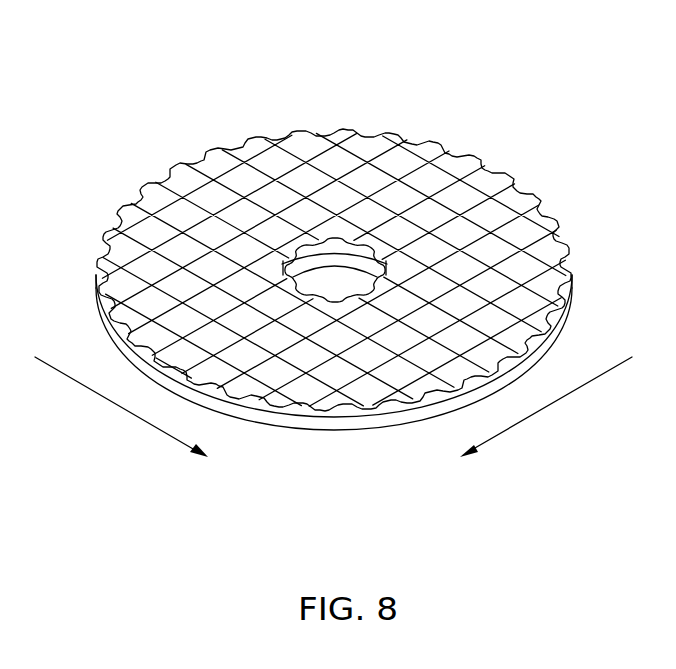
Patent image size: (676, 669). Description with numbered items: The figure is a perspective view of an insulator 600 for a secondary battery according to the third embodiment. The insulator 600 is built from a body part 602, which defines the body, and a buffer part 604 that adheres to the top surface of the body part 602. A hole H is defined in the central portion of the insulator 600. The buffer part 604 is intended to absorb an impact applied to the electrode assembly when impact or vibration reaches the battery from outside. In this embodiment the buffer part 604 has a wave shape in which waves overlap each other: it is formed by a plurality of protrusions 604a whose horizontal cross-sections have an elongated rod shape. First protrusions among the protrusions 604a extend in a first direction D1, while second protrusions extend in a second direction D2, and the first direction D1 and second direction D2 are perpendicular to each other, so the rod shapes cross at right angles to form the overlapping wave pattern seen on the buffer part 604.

The insulator 600 is at (411, 73).
The body part 602 is at (327, 428).
The buffer part 604 is at (490, 172).
The protrusions 604a is at (334, 270).
The hole H is at (328, 270).
The first direction D1 is at (545, 408).
The second direction D2 is at (122, 408).